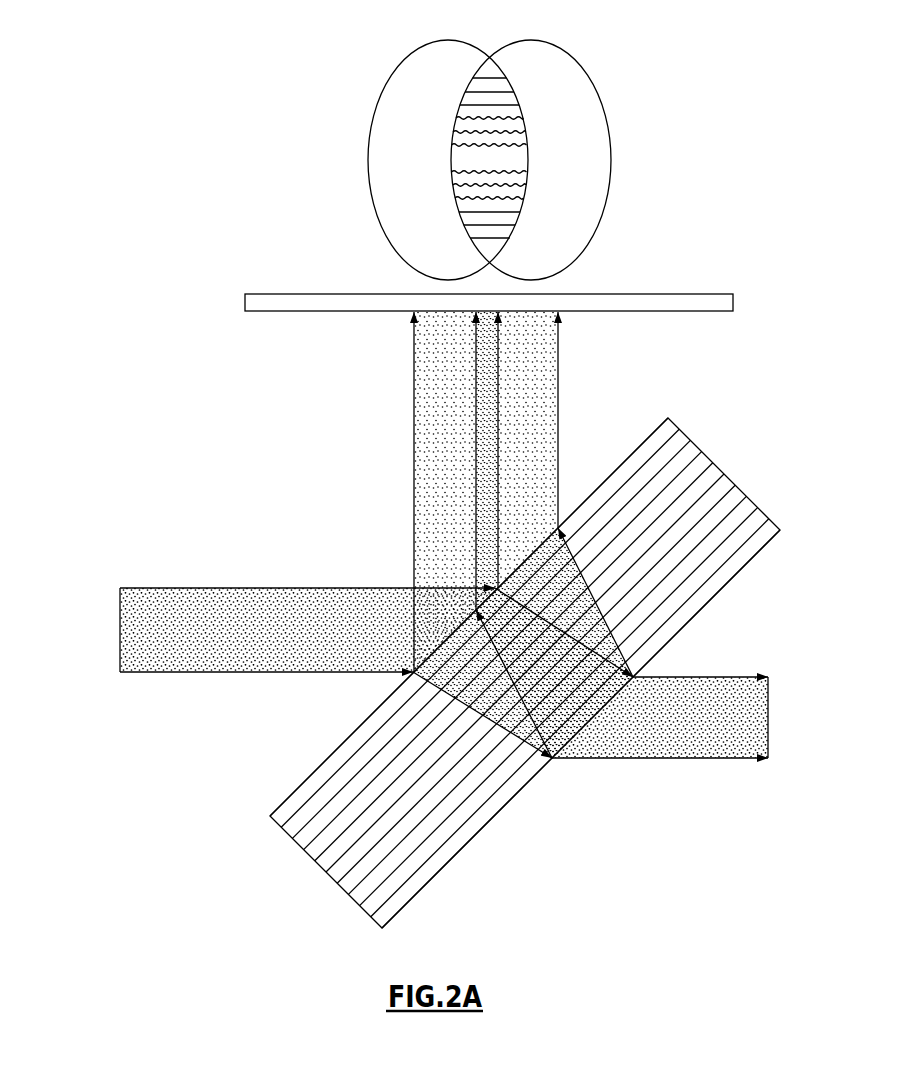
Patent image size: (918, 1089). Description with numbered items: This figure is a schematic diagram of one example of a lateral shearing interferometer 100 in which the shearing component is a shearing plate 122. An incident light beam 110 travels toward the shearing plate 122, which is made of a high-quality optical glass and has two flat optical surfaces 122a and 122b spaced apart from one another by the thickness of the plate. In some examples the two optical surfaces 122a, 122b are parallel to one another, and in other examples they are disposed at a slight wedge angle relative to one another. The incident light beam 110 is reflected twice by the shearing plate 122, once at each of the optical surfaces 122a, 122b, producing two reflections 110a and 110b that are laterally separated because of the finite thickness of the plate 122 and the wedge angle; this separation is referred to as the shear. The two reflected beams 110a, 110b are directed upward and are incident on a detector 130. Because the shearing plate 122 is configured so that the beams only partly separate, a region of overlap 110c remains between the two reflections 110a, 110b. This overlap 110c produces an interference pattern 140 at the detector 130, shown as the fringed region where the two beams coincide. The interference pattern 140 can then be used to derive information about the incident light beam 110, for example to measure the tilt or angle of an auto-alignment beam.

The lateral shearing interferometer 100 is at (134, 210).
The light beam 110 is at (183, 653).
The first reflected beam 110a is at (383, 202).
The second reflected beam 110b is at (580, 92).
The region of overlap 110c is at (482, 382).
The shearing plate 122 is at (433, 843).
The first optical surface 122a is at (310, 774).
The second optical surface 122b is at (494, 803).
The detector 130 is at (719, 312).
The interference pattern 140 is at (492, 82).